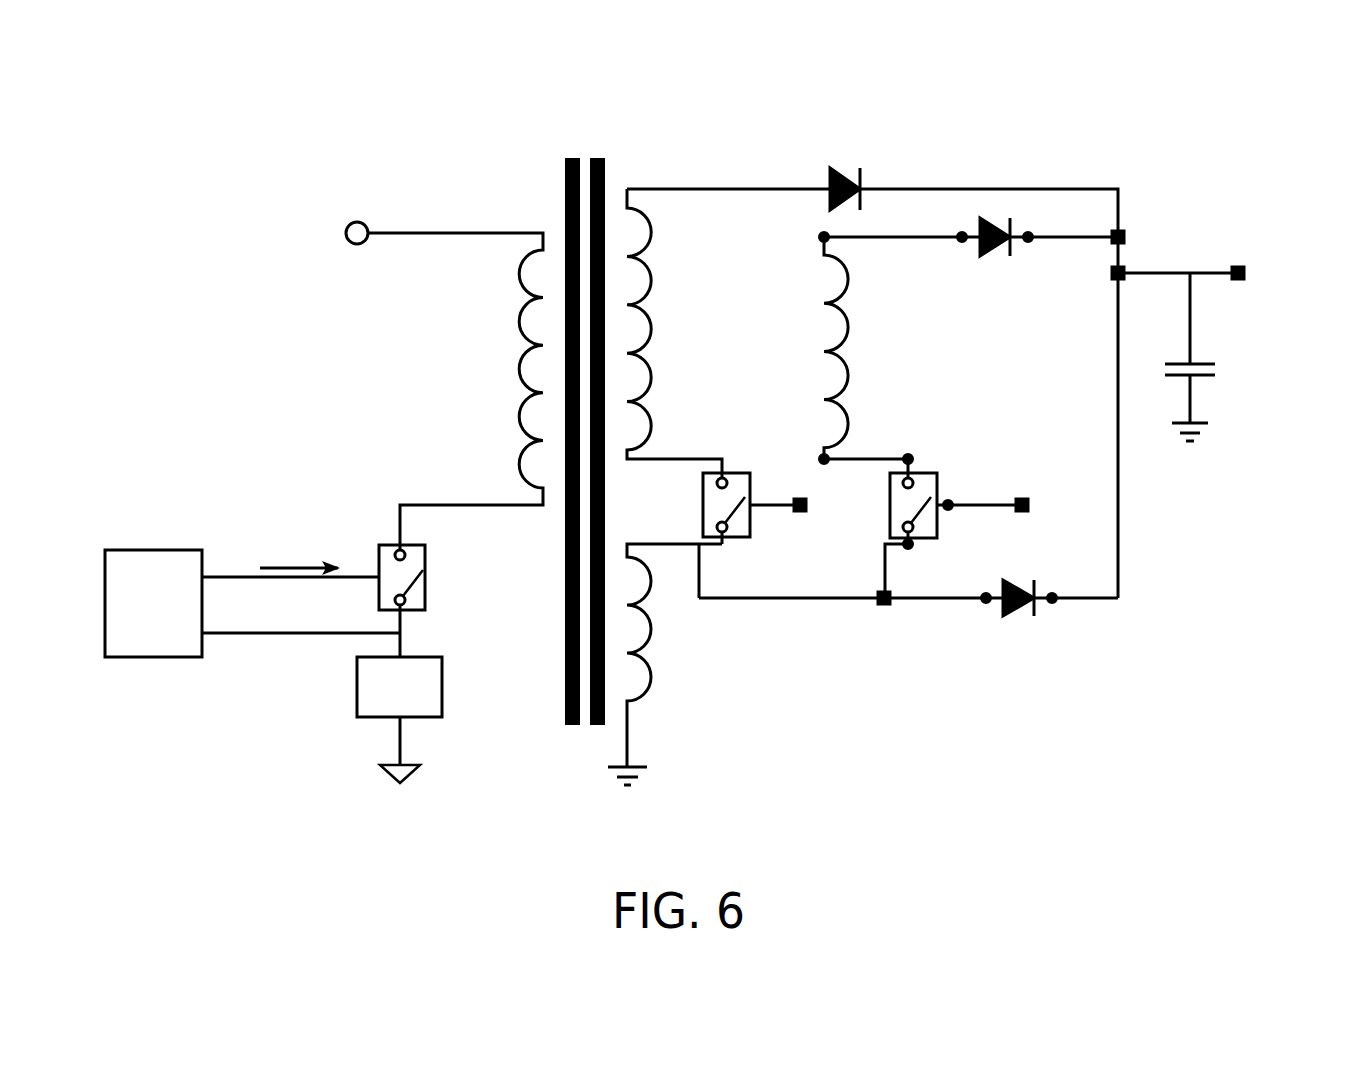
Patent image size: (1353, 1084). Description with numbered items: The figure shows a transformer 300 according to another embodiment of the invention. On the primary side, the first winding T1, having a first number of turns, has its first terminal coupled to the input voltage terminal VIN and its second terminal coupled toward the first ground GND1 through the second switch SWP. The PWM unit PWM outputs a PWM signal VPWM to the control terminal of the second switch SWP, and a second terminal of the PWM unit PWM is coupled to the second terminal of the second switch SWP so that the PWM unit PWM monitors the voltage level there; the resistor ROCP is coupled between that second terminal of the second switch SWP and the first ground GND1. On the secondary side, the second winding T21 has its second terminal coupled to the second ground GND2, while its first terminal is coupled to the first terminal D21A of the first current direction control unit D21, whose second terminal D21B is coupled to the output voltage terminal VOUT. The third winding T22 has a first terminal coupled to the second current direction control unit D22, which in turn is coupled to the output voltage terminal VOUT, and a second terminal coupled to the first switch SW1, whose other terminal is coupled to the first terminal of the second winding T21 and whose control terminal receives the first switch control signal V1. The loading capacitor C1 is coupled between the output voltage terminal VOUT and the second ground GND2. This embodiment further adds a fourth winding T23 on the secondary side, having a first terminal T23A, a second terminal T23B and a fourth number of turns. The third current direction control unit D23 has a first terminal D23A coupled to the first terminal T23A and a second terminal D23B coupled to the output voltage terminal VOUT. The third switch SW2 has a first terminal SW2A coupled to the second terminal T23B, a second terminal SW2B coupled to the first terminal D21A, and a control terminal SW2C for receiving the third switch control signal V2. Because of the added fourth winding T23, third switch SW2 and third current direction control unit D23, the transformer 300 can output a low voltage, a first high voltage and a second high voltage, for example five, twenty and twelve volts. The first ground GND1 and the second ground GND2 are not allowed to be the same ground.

The transformer 300 is at (1163, 135).
The first winding T1 is at (422, 391).
The second winding T21 is at (761, 655).
The third winding T22 is at (728, 333).
The fourth winding T23 is at (958, 348).
The first terminal of the fourth winding T23A is at (859, 231).
The second terminal of the fourth winding T23B is at (833, 457).
The first current direction control unit D21 is at (1060, 614).
The first terminal of the first current direction control unit D21A is at (851, 611).
The second terminal of the first current direction control unit D21B is at (1080, 583).
The second current direction control unit D22 is at (966, 182).
The third current direction control unit D23 is at (1049, 252).
The first terminal of the third current direction control unit D23A is at (942, 251).
The second terminal of the third current direction control unit D23B is at (1071, 223).
The first switch SW1 is at (703, 507).
The third switch SW2 is at (890, 506).
The first terminal of the third switch SW2A is at (905, 453).
The second terminal of the third switch SW2B is at (921, 569).
The control terminal of the third switch SW2C is at (976, 488).
The second switch SWP is at (425, 577).
The resistor ROCP is at (399, 711).
The loading capacitor C1 is at (1211, 348).
The PWM unit PWM is at (252, 603).
The PWM signal VPWM is at (298, 556).
The input voltage terminal VIN is at (356, 216).
The output voltage terminal VOUT is at (1210, 276).
The first switch control signal V1 is at (786, 521).
The third switch control signal V2 is at (1043, 506).
The first ground GND1 is at (402, 793).
The second ground GND2 is at (908, 624).